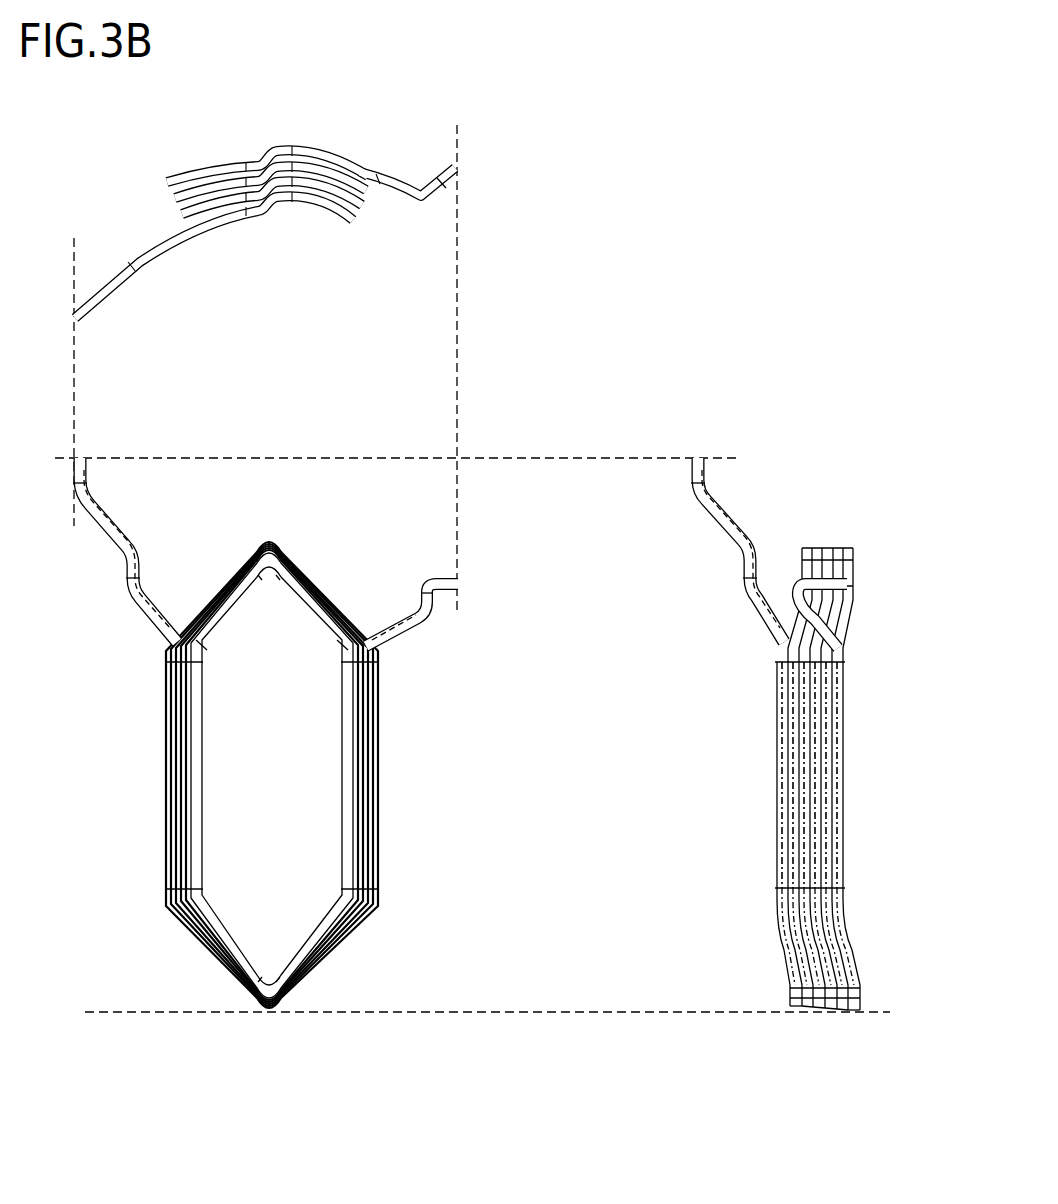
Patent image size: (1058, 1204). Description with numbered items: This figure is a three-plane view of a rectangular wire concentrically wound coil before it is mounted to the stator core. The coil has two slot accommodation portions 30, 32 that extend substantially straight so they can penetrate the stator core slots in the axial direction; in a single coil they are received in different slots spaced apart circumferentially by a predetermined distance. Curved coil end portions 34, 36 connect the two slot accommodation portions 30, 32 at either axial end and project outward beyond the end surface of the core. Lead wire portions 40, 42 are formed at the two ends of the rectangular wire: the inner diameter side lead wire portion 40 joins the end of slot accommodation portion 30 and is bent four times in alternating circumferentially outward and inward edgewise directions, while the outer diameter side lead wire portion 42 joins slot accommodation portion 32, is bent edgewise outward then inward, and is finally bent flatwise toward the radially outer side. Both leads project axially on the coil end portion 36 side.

The slot accommodation portion 30 is at (166, 749).
The slot accommodation portion 32 is at (379, 744).
The coil end portion 34 is at (270, 1011).
The coil end portion 36 is at (285, 212).
The lead wire portion 40 is at (115, 287).
The lead wire portion 42 is at (404, 205).